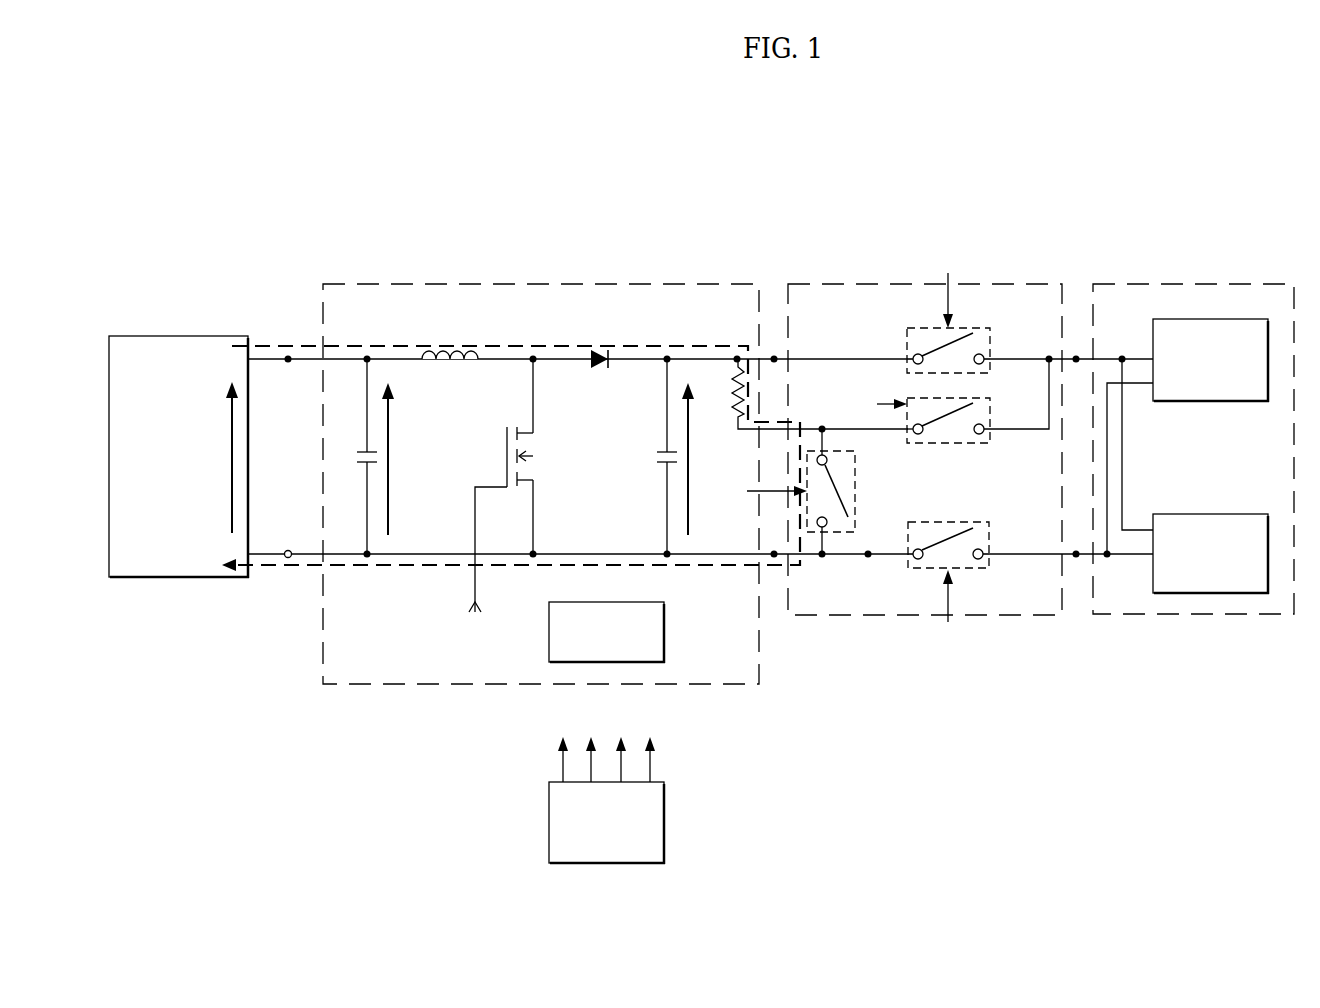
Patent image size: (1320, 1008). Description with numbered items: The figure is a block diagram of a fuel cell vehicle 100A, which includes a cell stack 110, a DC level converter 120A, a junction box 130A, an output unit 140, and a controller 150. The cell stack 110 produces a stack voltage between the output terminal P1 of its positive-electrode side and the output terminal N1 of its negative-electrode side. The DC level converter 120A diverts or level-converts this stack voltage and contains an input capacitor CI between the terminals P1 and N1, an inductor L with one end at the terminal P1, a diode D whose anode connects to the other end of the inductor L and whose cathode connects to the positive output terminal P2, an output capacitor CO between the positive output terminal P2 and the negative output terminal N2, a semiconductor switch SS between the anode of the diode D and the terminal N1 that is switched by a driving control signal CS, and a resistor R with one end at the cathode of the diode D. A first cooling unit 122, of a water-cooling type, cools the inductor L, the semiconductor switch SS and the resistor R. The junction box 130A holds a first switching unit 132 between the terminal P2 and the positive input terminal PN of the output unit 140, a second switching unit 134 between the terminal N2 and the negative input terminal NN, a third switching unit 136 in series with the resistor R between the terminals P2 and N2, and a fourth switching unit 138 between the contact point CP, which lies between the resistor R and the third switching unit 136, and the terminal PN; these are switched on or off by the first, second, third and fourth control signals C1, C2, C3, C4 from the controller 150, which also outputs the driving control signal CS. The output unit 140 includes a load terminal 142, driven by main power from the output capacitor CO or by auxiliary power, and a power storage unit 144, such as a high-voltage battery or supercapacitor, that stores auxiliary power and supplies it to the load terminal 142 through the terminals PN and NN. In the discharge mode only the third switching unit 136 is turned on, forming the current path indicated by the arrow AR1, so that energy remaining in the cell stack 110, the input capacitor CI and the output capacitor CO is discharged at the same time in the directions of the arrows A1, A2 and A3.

The fuel cell vehicle 100A is at (1057, 162).
The cell stack 110 is at (195, 336).
The DC level converter 120A is at (552, 284).
The first cooling unit 122 is at (627, 602).
The junction box 130A is at (830, 283).
The first switching unit 132 is at (967, 328).
The second switching unit 134 is at (965, 568).
The third switching unit 136 is at (850, 534).
The fourth switching unit 138 is at (967, 443).
The output unit 140 is at (1177, 283).
The load terminal 142 is at (1227, 319).
The power storage unit 144 is at (1227, 514).
The controller 150 is at (623, 864).
The output terminal of positive-electrode side P1 is at (288, 373).
The output terminal of negative-electrode side N1 is at (290, 540).
The positive output terminal P2 is at (774, 354).
The negative output terminal N2 is at (774, 558).
The positive input terminal PN is at (1076, 354).
The negative input terminal NN is at (1076, 558).
The contact point CP is at (822, 425).
The inductor L is at (450, 340).
The diode D is at (599, 344).
The semiconductor switch SS is at (536, 457).
The driving control signal CS is at (485, 564).
The input capacitor CI is at (353, 457).
The output capacitor CO is at (651, 457).
The resistor R is at (811, 393).
The arrow A1 is at (230, 522).
The arrow A2 is at (391, 508).
The arrow A3 is at (686, 518).
The arrow AR1 is at (265, 568).
The first control signal C1 is at (948, 289).
The second control signal C2 is at (948, 610).
The third control signal C3 is at (764, 495).
The fourth control signal C4 is at (880, 408).